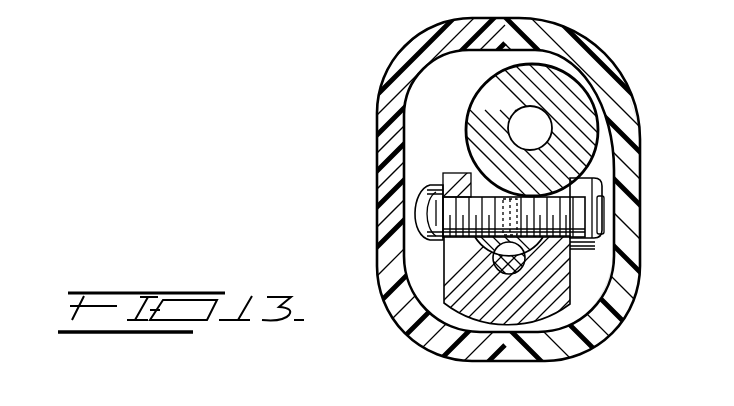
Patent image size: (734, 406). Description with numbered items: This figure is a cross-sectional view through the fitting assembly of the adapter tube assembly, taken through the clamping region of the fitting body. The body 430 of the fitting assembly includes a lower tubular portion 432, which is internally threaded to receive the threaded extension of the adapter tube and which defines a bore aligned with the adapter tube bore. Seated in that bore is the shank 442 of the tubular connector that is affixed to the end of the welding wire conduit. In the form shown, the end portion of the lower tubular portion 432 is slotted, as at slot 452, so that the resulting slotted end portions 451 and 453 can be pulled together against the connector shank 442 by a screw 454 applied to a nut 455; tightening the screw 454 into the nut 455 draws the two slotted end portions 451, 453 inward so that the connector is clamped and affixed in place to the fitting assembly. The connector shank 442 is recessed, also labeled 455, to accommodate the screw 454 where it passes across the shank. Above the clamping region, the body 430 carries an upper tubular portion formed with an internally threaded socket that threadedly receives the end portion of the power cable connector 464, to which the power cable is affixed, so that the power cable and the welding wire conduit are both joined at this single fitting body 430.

The body 430 is at (576, 256).
The lower tubular portion 432 is at (578, 261).
The shank 442 is at (480, 250).
The slotted end portion 451 is at (637, 134).
The slot 452 is at (513, 198).
The slotted end portion 453 is at (467, 121).
The screw 454 is at (425, 193).
The nut 455 is at (586, 186).
The power cable connector 464 is at (581, 93).